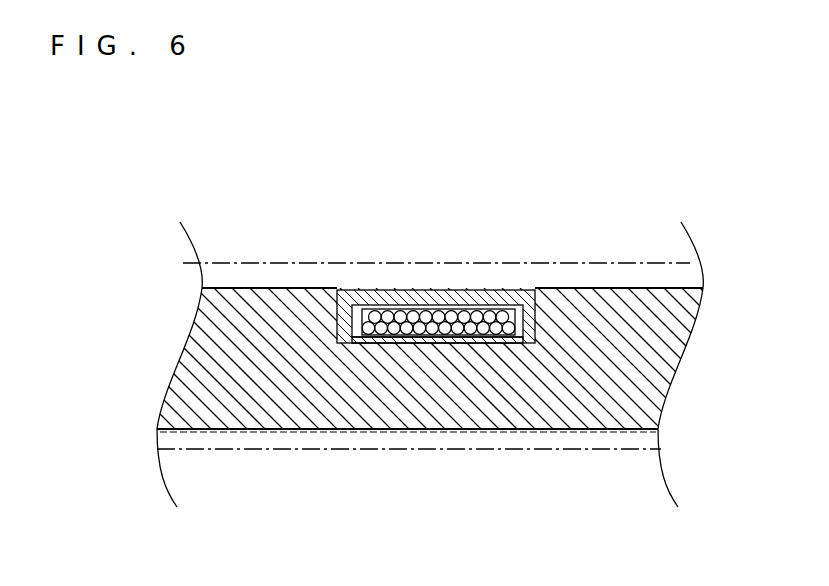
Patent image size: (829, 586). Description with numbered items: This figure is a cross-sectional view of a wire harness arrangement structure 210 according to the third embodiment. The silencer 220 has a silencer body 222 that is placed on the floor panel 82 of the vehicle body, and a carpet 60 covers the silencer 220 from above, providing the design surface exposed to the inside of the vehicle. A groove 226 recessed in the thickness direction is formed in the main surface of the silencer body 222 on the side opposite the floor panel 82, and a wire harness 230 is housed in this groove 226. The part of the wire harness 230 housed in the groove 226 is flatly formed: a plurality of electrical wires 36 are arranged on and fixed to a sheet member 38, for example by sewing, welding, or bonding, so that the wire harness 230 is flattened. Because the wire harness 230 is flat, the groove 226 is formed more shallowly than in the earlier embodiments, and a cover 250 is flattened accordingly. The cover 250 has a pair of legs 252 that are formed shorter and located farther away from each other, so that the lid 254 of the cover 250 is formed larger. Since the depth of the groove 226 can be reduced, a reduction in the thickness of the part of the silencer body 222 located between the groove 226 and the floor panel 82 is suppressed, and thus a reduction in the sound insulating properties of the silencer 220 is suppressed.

The wire harness arrangement structure 210 is at (224, 161).
The carpet 60 is at (641, 272).
The floor panel 82 is at (355, 451).
The silencer body 222 is at (668, 369).
The silencer 220 is at (586, 432).
The groove 226 is at (508, 347).
The cover 250 is at (540, 228).
The lid 254 is at (463, 300).
The legs 252 is at (506, 338).
The wire harness 230 is at (345, 218).
The sheet member 38 is at (358, 315).
The electrical wires 36 is at (402, 312).